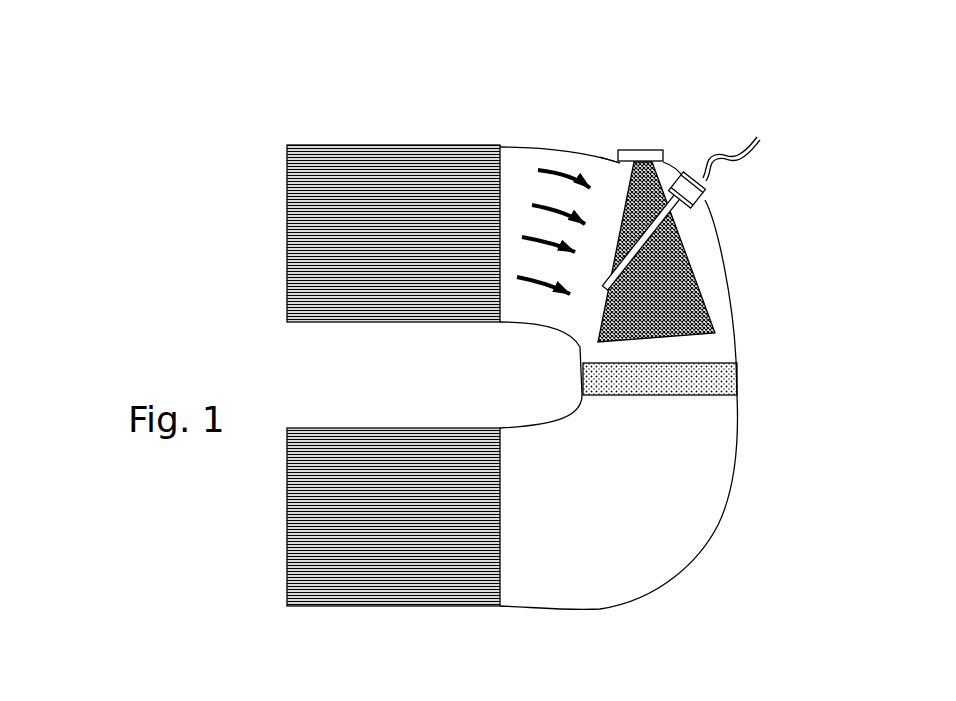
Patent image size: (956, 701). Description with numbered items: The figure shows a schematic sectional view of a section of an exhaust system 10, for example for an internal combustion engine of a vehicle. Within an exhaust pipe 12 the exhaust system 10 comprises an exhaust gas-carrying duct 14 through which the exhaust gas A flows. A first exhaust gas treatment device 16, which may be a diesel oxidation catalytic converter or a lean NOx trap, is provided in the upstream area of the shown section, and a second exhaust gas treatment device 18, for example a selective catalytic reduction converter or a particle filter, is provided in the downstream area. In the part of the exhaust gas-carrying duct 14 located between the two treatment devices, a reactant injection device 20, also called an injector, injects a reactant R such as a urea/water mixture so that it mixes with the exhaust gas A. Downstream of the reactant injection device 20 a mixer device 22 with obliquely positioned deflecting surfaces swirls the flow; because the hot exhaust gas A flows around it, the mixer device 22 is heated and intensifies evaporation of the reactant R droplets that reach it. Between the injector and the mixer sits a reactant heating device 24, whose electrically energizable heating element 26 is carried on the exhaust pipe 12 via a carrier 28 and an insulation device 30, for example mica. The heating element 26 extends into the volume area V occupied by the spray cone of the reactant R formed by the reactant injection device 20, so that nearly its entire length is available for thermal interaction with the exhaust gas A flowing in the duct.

The exhaust system 10 is at (452, 347).
The exhaust pipe 12 is at (738, 430).
The exhaust gas-carrying duct 14 is at (700, 515).
The first exhaust gas treatment device 16 is at (375, 165).
The second exhaust gas treatment device 18 is at (365, 595).
The reactant injection device 20 is at (637, 150).
The mixer device 22 is at (725, 380).
The reactant heating device 24 is at (722, 228).
The heating element 26 is at (680, 217).
The carrier 28 is at (707, 198).
The insulation device 30 is at (678, 178).
The exhaust gas A is at (552, 245).
The reactant R is at (622, 184).
The volume area V is at (717, 314).